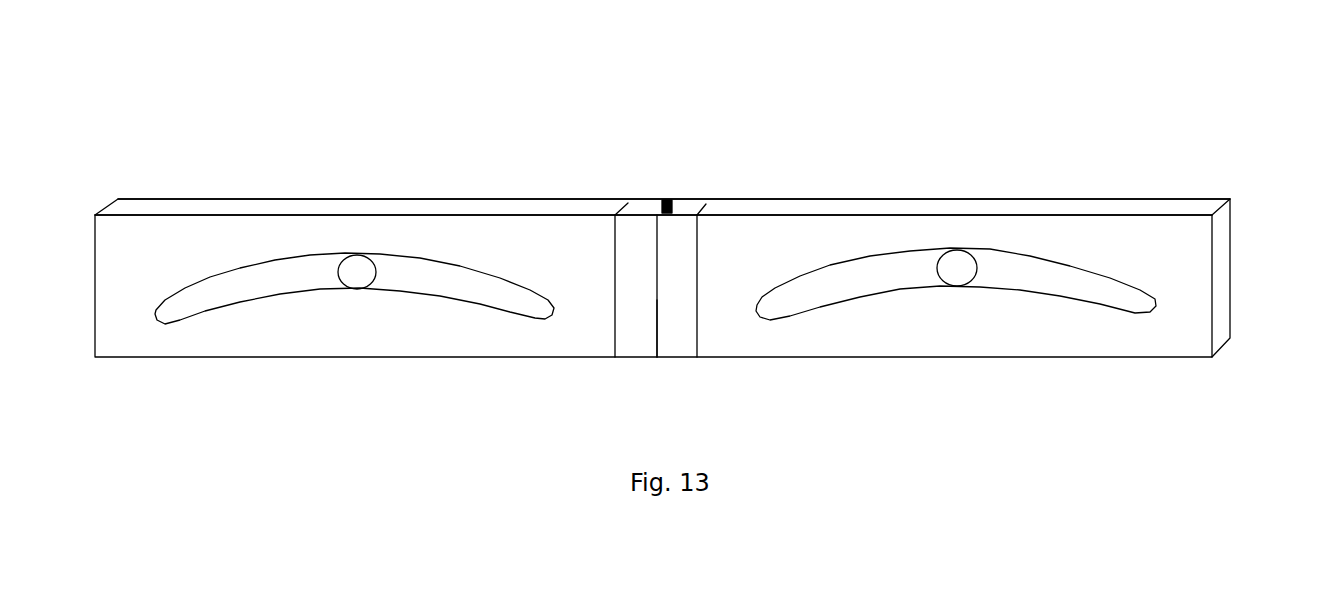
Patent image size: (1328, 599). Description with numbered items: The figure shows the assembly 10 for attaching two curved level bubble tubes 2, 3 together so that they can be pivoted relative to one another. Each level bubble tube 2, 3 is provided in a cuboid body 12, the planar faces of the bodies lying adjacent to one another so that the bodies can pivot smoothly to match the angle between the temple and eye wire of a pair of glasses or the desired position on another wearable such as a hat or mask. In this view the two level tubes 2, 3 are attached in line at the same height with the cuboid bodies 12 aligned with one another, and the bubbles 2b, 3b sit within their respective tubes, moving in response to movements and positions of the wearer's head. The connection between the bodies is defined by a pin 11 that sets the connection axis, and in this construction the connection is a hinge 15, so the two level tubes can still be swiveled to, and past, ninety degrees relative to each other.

The assembly 10 is at (1207, 126).
The pin 11 is at (665, 200).
The cuboid body 12 is at (412, 208).
The hinge 15 is at (662, 370).
The level bubble tube 2 is at (244, 305).
The bubble 2b is at (360, 289).
The level bubble tube 3 is at (1090, 306).
The bubble 3b is at (958, 286).